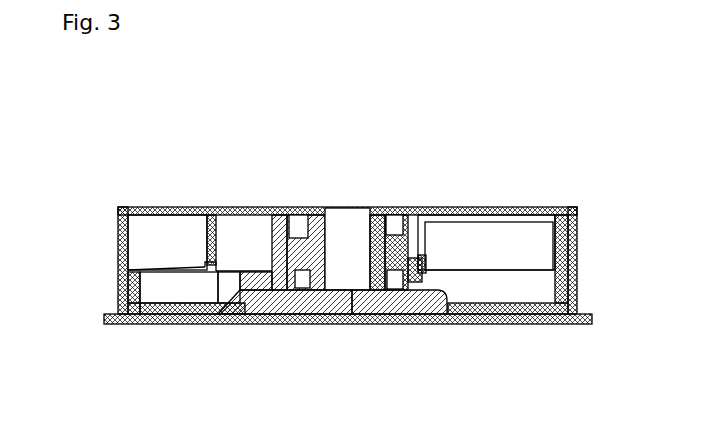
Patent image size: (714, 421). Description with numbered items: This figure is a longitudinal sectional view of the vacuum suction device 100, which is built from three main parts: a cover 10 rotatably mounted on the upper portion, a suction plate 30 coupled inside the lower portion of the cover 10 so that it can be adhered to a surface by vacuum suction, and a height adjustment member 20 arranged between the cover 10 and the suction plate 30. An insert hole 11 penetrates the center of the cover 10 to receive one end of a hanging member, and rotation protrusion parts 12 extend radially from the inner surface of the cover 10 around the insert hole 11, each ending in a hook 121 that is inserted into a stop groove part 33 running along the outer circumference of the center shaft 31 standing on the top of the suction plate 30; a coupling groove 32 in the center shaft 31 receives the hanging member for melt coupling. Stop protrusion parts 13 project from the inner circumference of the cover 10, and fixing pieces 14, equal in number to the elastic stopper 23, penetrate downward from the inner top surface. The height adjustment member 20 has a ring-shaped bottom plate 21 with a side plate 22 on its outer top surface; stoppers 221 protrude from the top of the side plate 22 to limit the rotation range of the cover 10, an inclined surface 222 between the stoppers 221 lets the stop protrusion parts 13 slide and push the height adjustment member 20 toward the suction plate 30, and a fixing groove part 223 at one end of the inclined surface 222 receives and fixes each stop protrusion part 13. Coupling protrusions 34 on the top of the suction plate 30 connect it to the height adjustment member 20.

The vacuum suction device 100 is at (446, 119).
The cover 10 is at (533, 203).
The insert hole 11 is at (395, 210).
The rotation protrusion parts 12 is at (430, 233).
The hook 121 is at (404, 222).
The stop protrusion parts 13 is at (228, 207).
The fixing pieces 14 is at (319, 214).
The height adjustment member 20 is at (118, 229).
The bottom plate 21 is at (143, 325).
The side plate 22 is at (126, 278).
The stoppers 221 is at (209, 262).
The inclined surface 222 is at (151, 260).
The fixing groove part 223 is at (182, 263).
The elastic stopper 23 is at (263, 262).
The suction plate 30 is at (543, 328).
The center shaft 31 is at (349, 285).
The coupling groove 32 is at (352, 325).
The stop groove part 33 is at (302, 325).
The coupling protrusions 34 is at (165, 325).